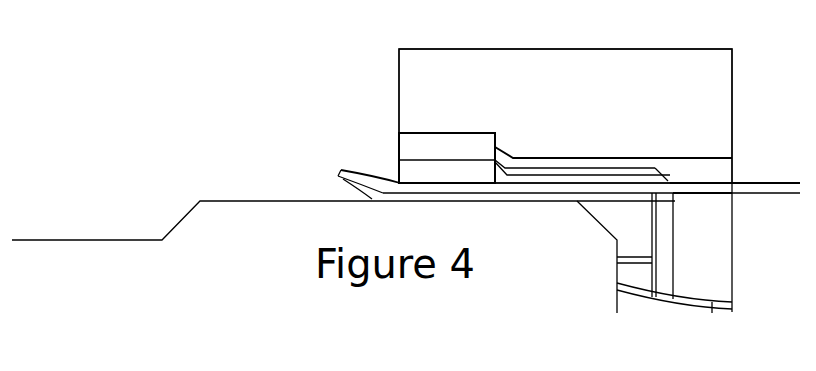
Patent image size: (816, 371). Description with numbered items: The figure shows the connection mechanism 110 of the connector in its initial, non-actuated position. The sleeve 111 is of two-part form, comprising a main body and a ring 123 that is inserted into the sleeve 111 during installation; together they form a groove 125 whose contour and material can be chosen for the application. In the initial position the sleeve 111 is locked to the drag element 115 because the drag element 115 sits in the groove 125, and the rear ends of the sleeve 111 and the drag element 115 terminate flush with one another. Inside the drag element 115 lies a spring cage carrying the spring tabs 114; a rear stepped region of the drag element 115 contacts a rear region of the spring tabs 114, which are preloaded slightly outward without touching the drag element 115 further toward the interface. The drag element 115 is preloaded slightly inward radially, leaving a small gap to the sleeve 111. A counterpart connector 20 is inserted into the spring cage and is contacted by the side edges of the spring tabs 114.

The counterpart connector 20 is at (343, 222).
The connection mechanism 110 is at (374, 56).
The sleeve 111 is at (565, 116).
The ring 123 is at (447, 158).
The groove 125 is at (507, 148).
The drag element 115 is at (723, 172).
The spring tabs 114 is at (340, 175).